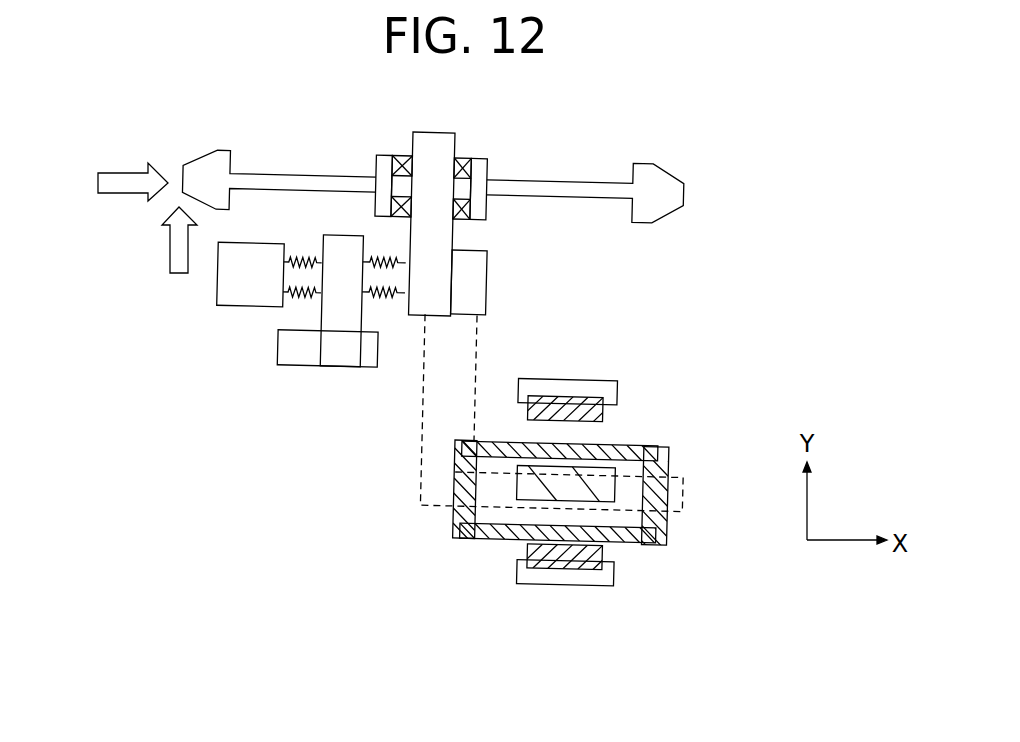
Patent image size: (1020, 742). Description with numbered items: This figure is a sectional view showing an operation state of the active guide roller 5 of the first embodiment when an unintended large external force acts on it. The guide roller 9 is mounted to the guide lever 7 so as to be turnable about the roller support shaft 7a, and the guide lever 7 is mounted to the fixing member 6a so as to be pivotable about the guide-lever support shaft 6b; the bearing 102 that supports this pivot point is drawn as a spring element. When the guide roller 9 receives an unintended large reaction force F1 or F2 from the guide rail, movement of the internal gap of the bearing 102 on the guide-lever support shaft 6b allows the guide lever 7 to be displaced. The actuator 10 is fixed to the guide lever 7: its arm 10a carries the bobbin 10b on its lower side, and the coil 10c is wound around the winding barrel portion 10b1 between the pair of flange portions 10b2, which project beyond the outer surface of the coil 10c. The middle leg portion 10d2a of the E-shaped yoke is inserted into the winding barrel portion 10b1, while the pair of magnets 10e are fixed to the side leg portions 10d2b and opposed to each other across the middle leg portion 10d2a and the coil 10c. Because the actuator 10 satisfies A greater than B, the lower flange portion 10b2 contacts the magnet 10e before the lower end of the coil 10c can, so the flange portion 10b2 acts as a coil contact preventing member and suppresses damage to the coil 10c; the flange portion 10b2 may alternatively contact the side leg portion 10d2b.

The active guide roller 5 is at (188, 101).
The roller support shaft 7a is at (443, 132).
The guide roller 9 is at (590, 181).
The guide lever 7 is at (475, 279).
The fixing member 6a is at (288, 351).
The guide-lever support shaft 6b is at (335, 355).
The bearing 102 is at (390, 302).
The actuator 10 is at (546, 470).
The arm 10a is at (436, 458).
The bobbin 10b is at (603, 479).
The winding barrel portion 10b1 is at (662, 447).
The flange portions 10b2 is at (630, 440).
The coil 10c is at (495, 448).
The middle leg portion 10d2a is at (528, 490).
The side leg portions 10d2b is at (547, 385).
The magnets 10e is at (578, 405).
The reaction force F1 is at (112, 171).
The reaction force F2 is at (170, 247).